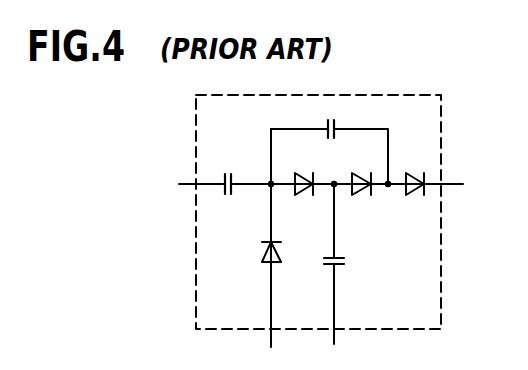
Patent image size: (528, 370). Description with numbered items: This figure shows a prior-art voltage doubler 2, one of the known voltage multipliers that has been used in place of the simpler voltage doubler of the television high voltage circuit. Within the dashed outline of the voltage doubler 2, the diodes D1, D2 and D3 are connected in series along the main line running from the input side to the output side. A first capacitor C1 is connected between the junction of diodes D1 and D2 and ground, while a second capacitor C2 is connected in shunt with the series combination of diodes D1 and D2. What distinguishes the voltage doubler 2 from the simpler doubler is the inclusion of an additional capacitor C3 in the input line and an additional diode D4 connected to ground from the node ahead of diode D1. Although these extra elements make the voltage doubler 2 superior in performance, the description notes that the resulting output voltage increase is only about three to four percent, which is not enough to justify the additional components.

The voltage doubler 2 is at (442, 167).
The first capacitor C1 is at (331, 266).
The second capacitor C2 is at (330, 133).
The additional capacitor C3 is at (230, 173).
The diode D1 is at (300, 191).
The diode D2 is at (362, 192).
The diode D3 is at (412, 192).
The additional diode D4 is at (263, 251).